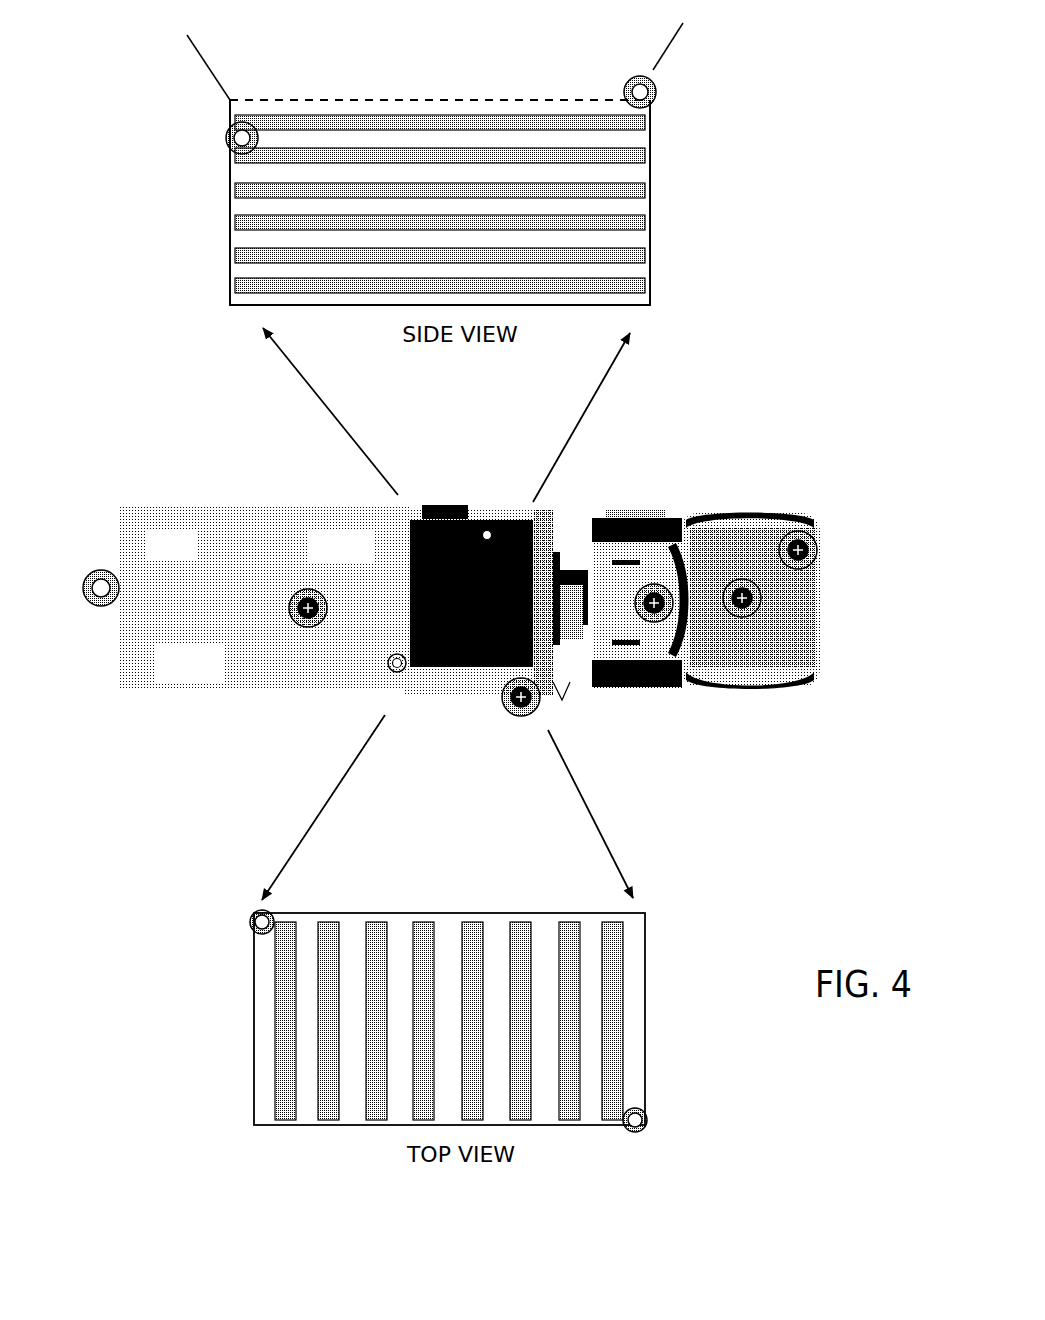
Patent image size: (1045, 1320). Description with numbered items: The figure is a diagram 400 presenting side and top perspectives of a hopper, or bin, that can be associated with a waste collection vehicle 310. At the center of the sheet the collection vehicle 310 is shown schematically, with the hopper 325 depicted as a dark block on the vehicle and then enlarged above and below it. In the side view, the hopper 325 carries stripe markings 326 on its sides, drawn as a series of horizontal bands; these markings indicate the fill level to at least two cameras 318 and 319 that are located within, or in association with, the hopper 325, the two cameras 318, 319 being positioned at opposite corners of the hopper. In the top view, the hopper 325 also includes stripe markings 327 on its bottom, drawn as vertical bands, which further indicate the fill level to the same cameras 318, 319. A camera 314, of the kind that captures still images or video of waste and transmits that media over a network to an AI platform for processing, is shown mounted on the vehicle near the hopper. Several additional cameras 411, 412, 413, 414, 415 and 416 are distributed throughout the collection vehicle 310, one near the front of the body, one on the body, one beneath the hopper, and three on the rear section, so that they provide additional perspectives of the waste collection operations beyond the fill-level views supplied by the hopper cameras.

The collection vehicle 310 is at (264, 597).
The camera 314 is at (489, 526).
The camera 318 is at (228, 142).
The camera 319 is at (626, 83).
The hopper 325 is at (446, 100).
The stripe markings 326 is at (640, 155).
The stripe markings 327 is at (572, 942).
The diagram 400 is at (848, 370).
The camera 411 is at (99, 606).
The camera 412 is at (290, 612).
The camera 413 is at (542, 705).
The camera 414 is at (672, 607).
The camera 415 is at (762, 603).
The camera 416 is at (816, 552).